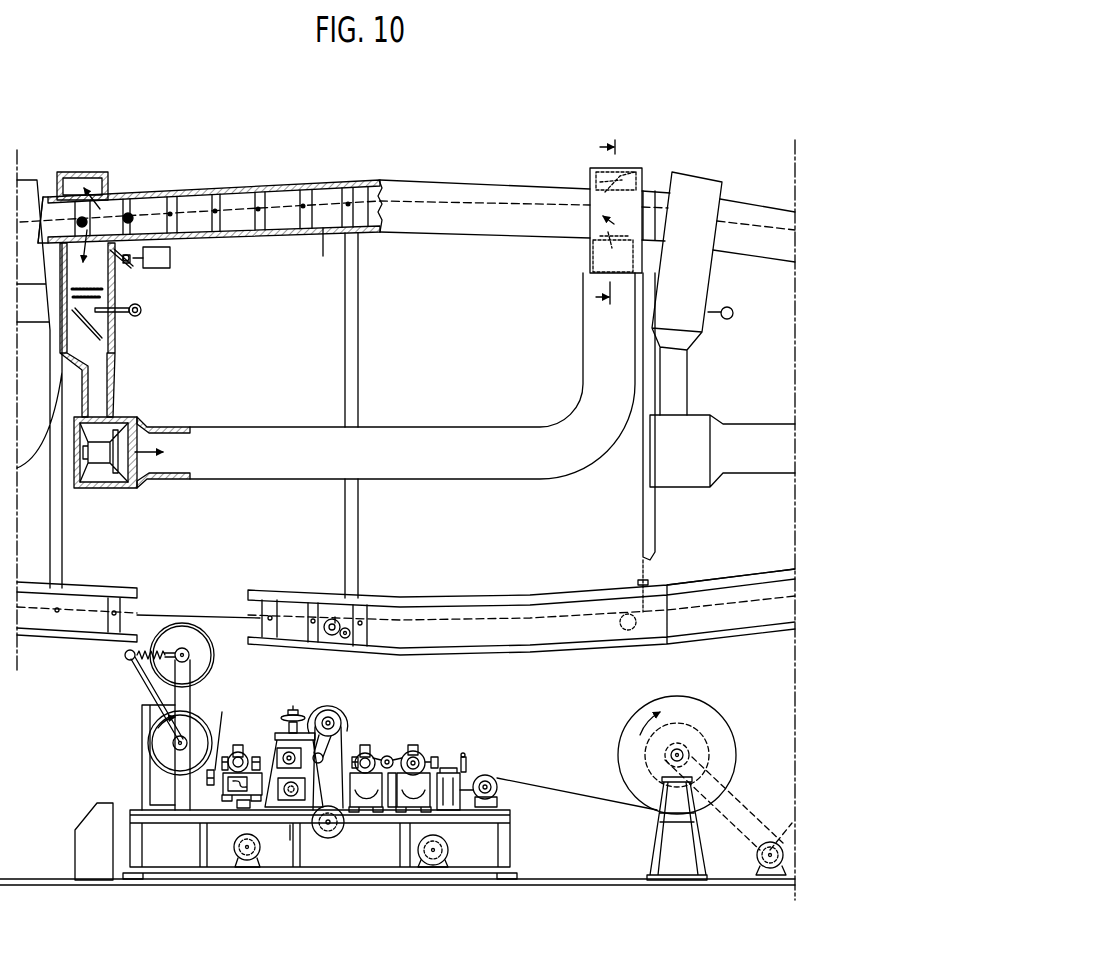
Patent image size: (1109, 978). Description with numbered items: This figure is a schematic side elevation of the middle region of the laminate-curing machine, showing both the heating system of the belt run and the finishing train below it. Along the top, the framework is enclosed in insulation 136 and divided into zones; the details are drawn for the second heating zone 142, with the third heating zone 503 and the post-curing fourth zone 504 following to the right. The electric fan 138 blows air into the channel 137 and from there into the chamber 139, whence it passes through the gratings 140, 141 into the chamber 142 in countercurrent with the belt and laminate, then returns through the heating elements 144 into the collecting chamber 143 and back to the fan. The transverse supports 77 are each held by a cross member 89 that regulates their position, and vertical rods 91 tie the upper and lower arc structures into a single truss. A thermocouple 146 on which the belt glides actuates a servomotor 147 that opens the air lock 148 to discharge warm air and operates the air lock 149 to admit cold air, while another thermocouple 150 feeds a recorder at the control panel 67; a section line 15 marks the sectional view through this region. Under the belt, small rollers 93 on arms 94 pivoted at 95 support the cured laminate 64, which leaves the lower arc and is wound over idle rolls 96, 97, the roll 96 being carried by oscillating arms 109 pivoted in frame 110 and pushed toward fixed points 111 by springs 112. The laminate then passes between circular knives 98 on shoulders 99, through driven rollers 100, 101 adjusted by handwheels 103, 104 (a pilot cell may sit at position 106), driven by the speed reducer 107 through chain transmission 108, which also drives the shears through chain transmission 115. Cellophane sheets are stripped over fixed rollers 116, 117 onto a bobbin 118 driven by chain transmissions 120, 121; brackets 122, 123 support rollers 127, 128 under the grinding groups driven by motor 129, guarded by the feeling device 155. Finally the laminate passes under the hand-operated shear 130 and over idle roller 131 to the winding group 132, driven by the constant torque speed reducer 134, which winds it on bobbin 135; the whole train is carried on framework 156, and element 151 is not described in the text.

The section line 15- 15 is at (617, 226).
The laminate 64 is at (215, 618).
The control panel 67 is at (92, 875).
The transverse supports 77 is at (75, 218).
The cross member 89 is at (80, 228).
The vertical rods 91 is at (56, 552).
The small rollers 93 is at (335, 618).
The arms 94 is at (342, 637).
The pivot 95 is at (352, 633).
The idle roll 96 is at (212, 655).
The idle roll 97 is at (192, 770).
The circular knives 98 is at (238, 750).
The shoulders 99 is at (244, 758).
The lower driven roller 100 is at (277, 810).
The upper driven roller 101 is at (226, 790).
The double handwheel 103 is at (293, 745).
The double handwheel 104 is at (288, 720).
The pilot cell position 106 is at (210, 786).
The direct current speed reducer 107 is at (240, 862).
The chain transmission 108 is at (288, 817).
The oscillating arms 109 is at (188, 705).
The frame 110 is at (142, 793).
The fixed points 111 is at (130, 660).
The springs 112 is at (142, 670).
The chain transmission 115 is at (243, 822).
The fixed roller 116 is at (366, 750).
The fixed roller 117 is at (322, 838).
The bobbin 118 is at (346, 718).
The chain transmission 120 is at (290, 840).
The chain transmission 121 is at (330, 712).
The bracket 122 is at (385, 808).
The bracket 123 is at (452, 772).
The roller 127 is at (389, 756).
The roller 128 is at (420, 755).
The induction three-phase motor 129 is at (436, 866).
The hand-operated shear 130 is at (466, 765).
The idle roller 131 is at (498, 790).
The winding group 132 is at (680, 876).
The direct current constant torque speed reducer 134 is at (770, 870).
The bobbin 135 is at (735, 768).
The insulation 136 is at (232, 192).
The channel 137 is at (217, 478).
The electric fan 138 is at (104, 480).
The chamber 139 is at (604, 166).
The grating 140 is at (613, 245).
The grating 141 is at (652, 160).
The second heating zone chamber 142 is at (281, 197).
The collecting chamber 143 is at (68, 176).
The heating elements 144 is at (98, 300).
The thermocouple 146 is at (326, 203).
The servomotor 147 is at (170, 263).
The air lock 148 is at (135, 273).
The air lock 149 is at (103, 332).
The thermocouple 150 is at (375, 193).
The conveyor track 151 is at (588, 635).
The feeling device 155 is at (372, 765).
The framework 156 is at (408, 870).
The third heating zone 503 is at (767, 253).
The fourth zone 504 is at (757, 577).